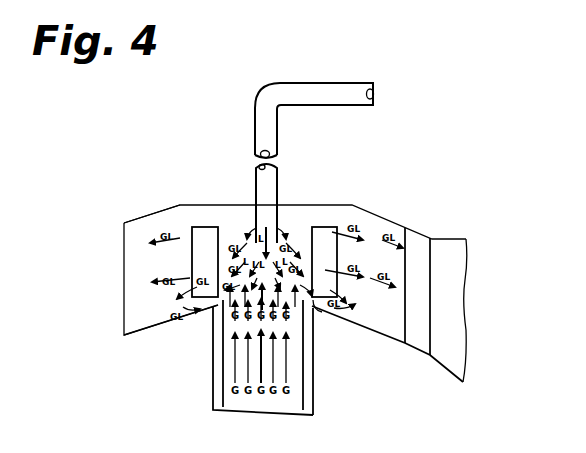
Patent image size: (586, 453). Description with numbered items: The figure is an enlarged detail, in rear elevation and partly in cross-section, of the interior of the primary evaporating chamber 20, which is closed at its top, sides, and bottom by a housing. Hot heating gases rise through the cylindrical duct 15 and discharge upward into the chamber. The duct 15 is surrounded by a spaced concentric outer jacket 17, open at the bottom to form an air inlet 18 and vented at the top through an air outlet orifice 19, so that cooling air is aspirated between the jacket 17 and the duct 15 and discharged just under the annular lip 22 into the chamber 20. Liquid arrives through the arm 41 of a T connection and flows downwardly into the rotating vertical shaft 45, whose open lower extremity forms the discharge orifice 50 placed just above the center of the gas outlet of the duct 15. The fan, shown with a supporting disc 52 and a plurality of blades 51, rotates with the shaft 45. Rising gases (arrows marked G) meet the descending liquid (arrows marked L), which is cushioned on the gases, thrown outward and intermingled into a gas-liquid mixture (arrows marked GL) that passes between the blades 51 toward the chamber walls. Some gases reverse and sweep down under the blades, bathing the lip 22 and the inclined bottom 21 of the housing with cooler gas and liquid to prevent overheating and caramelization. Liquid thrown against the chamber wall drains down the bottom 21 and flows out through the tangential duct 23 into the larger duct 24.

The arm of T connection 41 is at (337, 90).
The shaft 45 is at (273, 190).
The discharge orifice 50 is at (257, 240).
The supporting disc 52 is at (303, 227).
The primary evaporating chamber 20 is at (150, 220).
The bottom of the housing 21 is at (132, 332).
The annular lip 22 is at (316, 312).
The duct 23 is at (417, 252).
The larger duct 24 is at (450, 252).
The fan blades 51 is at (195, 261).
The air outlet orifice 19 is at (213, 310).
The outer jacket 17 is at (213, 368).
The air inlet 18 is at (213, 390).
The cylindrical duct 15 is at (303, 378).